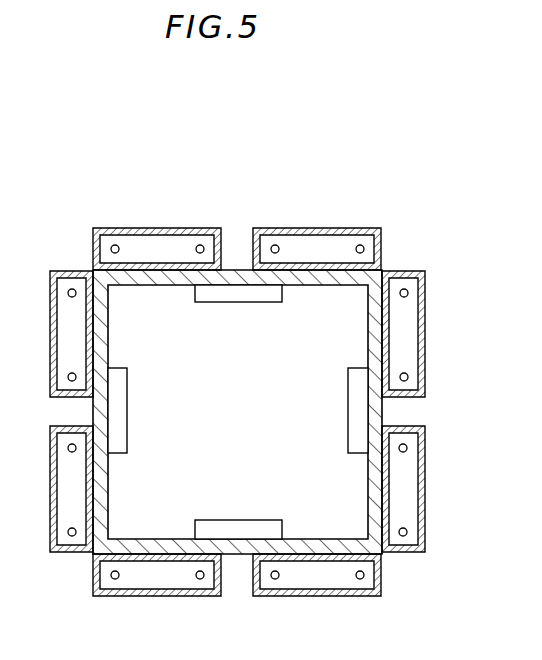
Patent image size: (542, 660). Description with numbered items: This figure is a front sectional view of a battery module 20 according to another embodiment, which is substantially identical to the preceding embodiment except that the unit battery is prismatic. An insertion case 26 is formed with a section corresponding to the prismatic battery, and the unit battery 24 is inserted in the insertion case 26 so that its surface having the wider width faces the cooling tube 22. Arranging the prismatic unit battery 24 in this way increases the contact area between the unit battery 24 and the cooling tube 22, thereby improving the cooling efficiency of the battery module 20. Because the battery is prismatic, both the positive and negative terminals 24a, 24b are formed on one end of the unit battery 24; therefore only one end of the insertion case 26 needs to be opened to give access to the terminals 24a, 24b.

The battery module 20 is at (266, 391).
The cooling tube 22 is at (384, 405).
The unit battery 24 is at (412, 497).
The positive terminal 24a is at (407, 446).
The negative terminal 24b is at (407, 535).
The insertion case 26 is at (425, 470).